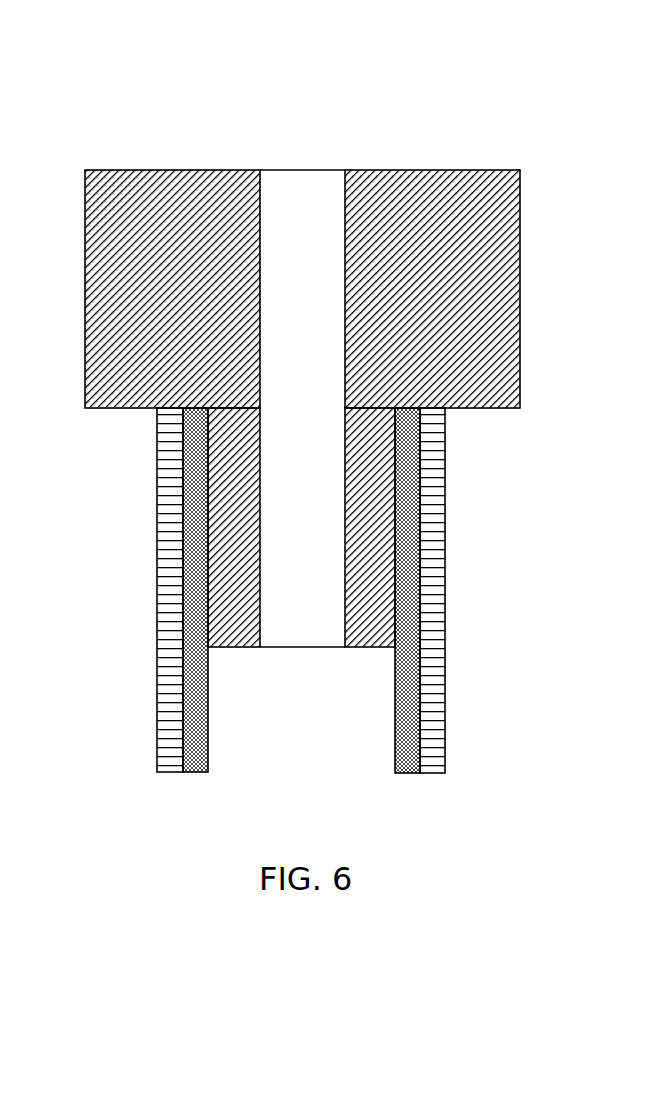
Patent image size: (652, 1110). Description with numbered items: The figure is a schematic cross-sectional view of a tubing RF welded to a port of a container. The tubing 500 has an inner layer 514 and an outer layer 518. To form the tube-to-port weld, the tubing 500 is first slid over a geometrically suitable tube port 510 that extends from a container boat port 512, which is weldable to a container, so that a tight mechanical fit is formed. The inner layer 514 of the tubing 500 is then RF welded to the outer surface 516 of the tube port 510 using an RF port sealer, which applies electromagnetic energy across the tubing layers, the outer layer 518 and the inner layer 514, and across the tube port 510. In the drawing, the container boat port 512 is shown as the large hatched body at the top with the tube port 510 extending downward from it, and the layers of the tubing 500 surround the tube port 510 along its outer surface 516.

The tubing 500 is at (333, 590).
The tube port 510 is at (233, 558).
The container boat port 512 is at (472, 168).
The inner layer 514 is at (407, 583).
The outer surface of the tube port 516 is at (205, 617).
The outer layer 518 is at (433, 522).